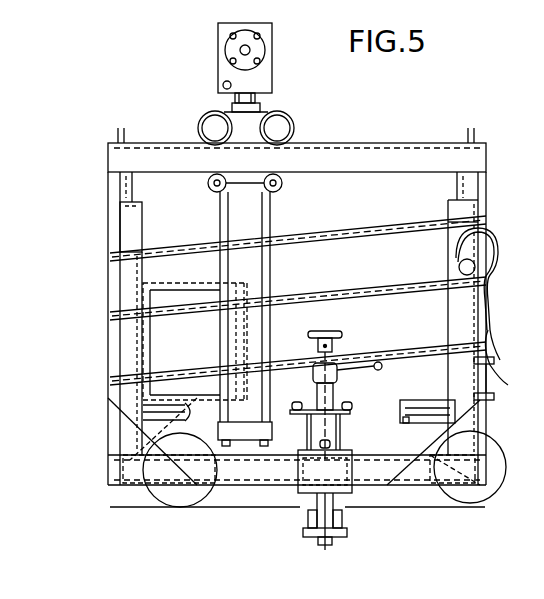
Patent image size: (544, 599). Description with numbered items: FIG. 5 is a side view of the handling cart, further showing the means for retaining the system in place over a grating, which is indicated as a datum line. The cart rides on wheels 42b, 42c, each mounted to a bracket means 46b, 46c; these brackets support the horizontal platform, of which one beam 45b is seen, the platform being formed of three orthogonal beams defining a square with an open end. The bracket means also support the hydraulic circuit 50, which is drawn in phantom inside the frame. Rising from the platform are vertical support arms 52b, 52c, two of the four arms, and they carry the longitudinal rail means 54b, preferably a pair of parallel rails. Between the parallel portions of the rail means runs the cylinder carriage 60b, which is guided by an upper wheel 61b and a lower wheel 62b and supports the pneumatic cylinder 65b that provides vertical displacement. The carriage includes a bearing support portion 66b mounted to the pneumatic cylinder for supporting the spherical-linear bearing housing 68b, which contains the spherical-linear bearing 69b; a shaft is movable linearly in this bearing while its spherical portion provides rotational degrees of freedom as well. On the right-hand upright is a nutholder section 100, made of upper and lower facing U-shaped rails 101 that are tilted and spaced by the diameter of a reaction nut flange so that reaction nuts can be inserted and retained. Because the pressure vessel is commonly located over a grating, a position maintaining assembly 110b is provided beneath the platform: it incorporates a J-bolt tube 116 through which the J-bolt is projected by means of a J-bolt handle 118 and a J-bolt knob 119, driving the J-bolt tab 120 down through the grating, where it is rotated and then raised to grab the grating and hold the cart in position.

The hydraulic circuit 50 is at (162, 346).
The wheel 42b is at (490, 494).
The wheel 42c is at (196, 496).
The beam 45b is at (382, 480).
The bracket means 46b is at (427, 446).
The bracket means 46c is at (178, 412).
The vertical support arm 52b is at (468, 220).
The vertical support arm 52c is at (124, 230).
The longitudinal rail means 54b is at (380, 147).
The cylinder carriage 60b is at (284, 123).
The upper wheel 61b is at (206, 128).
The lower wheel 62b is at (214, 193).
The pneumatic cylinder 65b is at (262, 105).
The bearing support portion 66b is at (236, 100).
The spherical-linear bearing housing 68b is at (262, 30).
The spherical-linear bearing 69b is at (262, 47).
The nutholder section 100 is at (470, 226).
The U-shaped rail 101 is at (485, 328).
The position maintaining assembly 110b is at (326, 330).
The J-bolt tube 116 is at (330, 392).
The J-bolt handle 118 is at (378, 370).
The J-bolt knob 119 is at (334, 340).
The J-bolt tab 120 is at (314, 538).